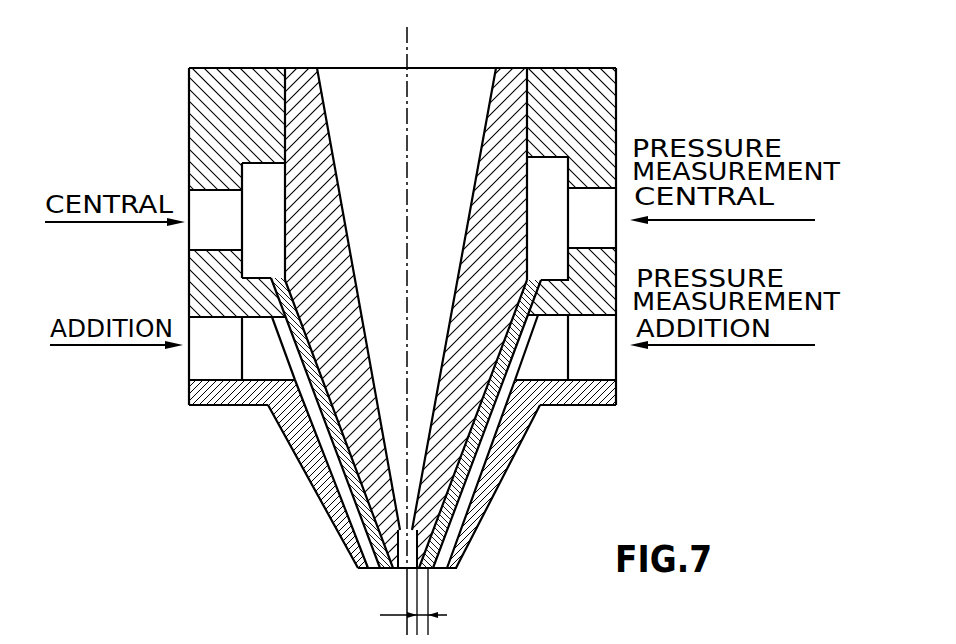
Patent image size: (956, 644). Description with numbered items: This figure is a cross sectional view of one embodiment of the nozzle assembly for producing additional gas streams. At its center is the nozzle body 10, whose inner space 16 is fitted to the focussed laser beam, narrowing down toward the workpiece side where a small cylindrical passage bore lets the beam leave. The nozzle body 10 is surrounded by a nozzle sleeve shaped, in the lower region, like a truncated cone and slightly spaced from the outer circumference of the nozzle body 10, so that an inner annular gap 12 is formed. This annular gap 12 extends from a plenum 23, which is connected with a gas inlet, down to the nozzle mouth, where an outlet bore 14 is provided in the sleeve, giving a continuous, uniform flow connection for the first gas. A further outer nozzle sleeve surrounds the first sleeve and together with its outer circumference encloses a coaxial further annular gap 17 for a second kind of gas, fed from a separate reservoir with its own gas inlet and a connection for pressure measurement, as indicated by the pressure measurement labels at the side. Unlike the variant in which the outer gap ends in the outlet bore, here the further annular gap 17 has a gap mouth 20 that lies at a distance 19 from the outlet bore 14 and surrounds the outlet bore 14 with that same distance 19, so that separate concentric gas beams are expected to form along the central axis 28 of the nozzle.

The nozzle body 10 is at (510, 83).
The annular gap 12 is at (480, 457).
The outlet bore 14 is at (400, 569).
The inner space 16 is at (447, 113).
The further annular gap 17 is at (507, 413).
The distance 19 is at (428, 612).
The gap mouth 20 is at (388, 570).
The plenum 23 is at (557, 173).
The central axis 28 is at (403, 42).